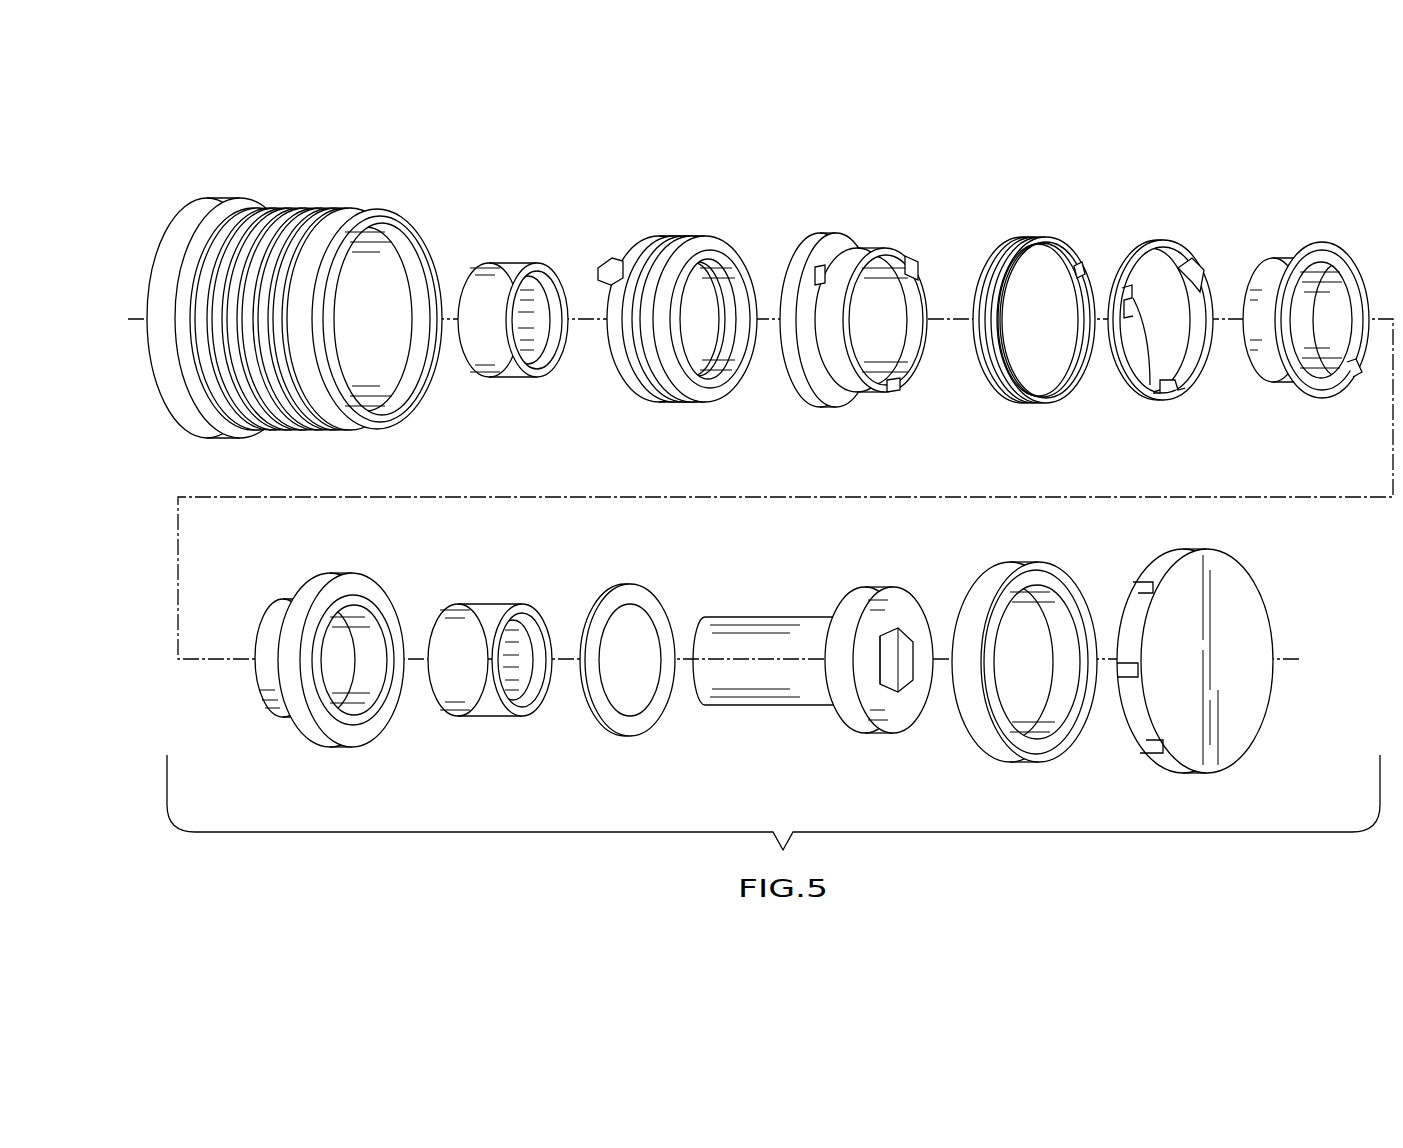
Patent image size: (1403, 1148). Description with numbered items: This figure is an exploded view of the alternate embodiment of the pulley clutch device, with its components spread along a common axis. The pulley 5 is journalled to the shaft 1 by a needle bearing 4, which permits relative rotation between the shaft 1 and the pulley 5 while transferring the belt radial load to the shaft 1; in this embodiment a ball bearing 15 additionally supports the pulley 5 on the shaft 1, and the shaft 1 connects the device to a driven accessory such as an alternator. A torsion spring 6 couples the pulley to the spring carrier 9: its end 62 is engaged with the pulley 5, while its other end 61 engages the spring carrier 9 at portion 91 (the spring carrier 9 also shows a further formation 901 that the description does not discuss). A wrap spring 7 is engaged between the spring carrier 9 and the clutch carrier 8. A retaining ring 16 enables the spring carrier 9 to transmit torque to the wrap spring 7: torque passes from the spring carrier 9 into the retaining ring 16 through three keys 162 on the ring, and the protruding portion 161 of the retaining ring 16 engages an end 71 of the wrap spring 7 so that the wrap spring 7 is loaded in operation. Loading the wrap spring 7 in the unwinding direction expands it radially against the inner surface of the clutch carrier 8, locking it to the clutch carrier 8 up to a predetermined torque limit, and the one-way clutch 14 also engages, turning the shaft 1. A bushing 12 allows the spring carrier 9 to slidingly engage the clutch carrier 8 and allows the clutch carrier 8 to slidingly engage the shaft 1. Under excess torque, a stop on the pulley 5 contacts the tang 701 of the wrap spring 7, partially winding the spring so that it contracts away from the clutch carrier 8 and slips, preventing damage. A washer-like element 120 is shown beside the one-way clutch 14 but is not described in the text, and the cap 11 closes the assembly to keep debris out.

The pulley 5 is at (208, 197).
The needle bearing 4 is at (505, 262).
The torsion spring end 62 is at (603, 262).
The ratchet ring 6 is at (654, 296).
The torsion spring end 61 is at (697, 256).
The spring carrier 9 is at (839, 299).
The slot 901 is at (833, 258).
The portion 91 is at (800, 262).
The tang 701 is at (993, 244).
The wrap spring 7 is at (1013, 300).
The end 71 is at (1080, 266).
The retaining ring 16 is at (1180, 310).
The protruding portion 161 is at (1195, 262).
The keys 162 is at (1180, 398).
The bushing 12 is at (1298, 250).
The clutch carrier 8 is at (321, 573).
The one-way clutch 14 is at (497, 605).
The washer 120 is at (628, 585).
The shaft 1 is at (765, 622).
The ball bearing 15 is at (981, 570).
The cap 11 is at (1160, 560).